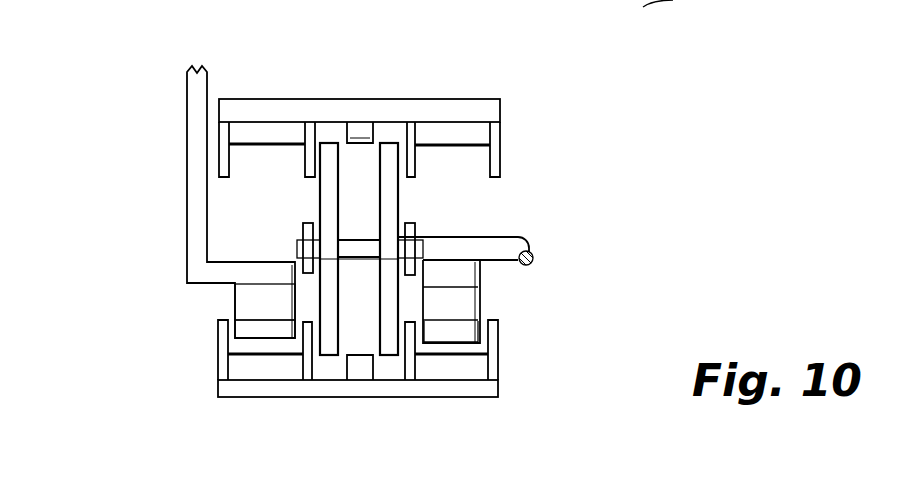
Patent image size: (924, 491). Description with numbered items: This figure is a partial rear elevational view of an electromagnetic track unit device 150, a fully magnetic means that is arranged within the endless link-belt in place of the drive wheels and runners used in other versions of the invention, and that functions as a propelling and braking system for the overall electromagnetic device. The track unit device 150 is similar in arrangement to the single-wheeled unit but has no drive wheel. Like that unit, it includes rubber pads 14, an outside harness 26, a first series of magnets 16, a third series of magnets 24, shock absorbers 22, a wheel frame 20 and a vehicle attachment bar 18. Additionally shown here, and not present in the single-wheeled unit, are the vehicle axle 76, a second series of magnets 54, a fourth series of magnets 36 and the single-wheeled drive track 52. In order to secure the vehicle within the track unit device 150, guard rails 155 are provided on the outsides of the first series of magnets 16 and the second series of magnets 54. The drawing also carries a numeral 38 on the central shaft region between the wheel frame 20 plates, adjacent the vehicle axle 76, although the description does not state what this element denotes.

The electromagnetic track unit device 150 is at (108, 63).
The rubber pads 14 is at (297, 128).
The first series of magnets 16 is at (240, 131).
The vehicle attachment bar 18 is at (193, 160).
The wheel frame 20 is at (325, 210).
The shock absorbers 22 is at (248, 302).
The third series of magnets 24 is at (248, 330).
The outside harness 26 is at (305, 235).
The fourth series of magnets 36 is at (463, 332).
The shaft 38 is at (413, 234).
The single-wheeled drive track 52 is at (358, 132).
The second series of magnets 54 is at (480, 130).
The vehicle axle 76 is at (502, 245).
The guard rails 155 is at (228, 158).